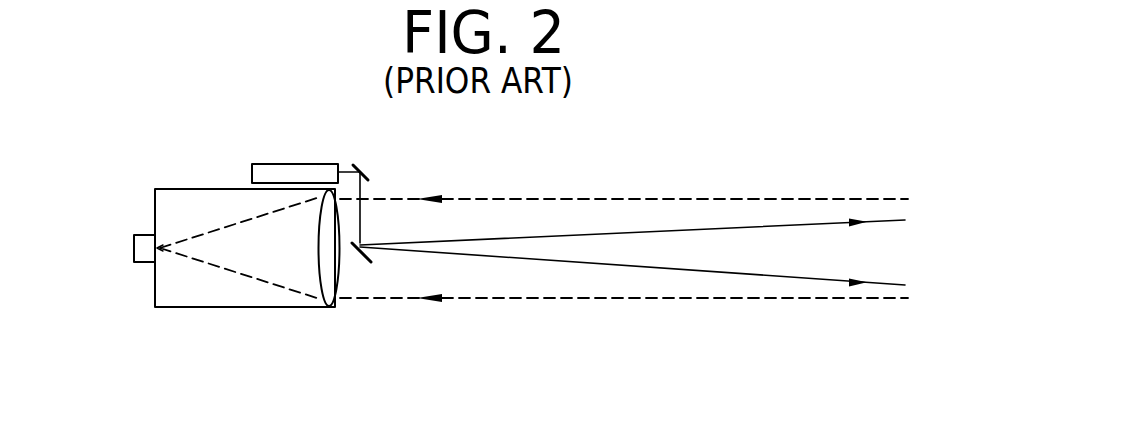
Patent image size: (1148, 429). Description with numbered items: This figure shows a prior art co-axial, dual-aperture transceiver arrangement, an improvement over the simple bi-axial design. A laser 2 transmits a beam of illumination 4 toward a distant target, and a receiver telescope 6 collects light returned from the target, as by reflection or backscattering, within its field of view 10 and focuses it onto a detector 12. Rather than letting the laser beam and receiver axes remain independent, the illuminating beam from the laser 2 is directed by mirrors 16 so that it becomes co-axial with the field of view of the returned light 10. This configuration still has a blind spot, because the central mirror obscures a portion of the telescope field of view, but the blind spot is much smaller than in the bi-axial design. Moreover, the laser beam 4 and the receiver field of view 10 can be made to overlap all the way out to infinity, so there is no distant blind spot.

The laser 2 is at (292, 174).
The beam of illumination 4 is at (803, 267).
The receiver telescope 6 is at (236, 348).
The field of view 10 is at (450, 285).
The detector 12 is at (126, 198).
The mirrors 16 is at (382, 218).